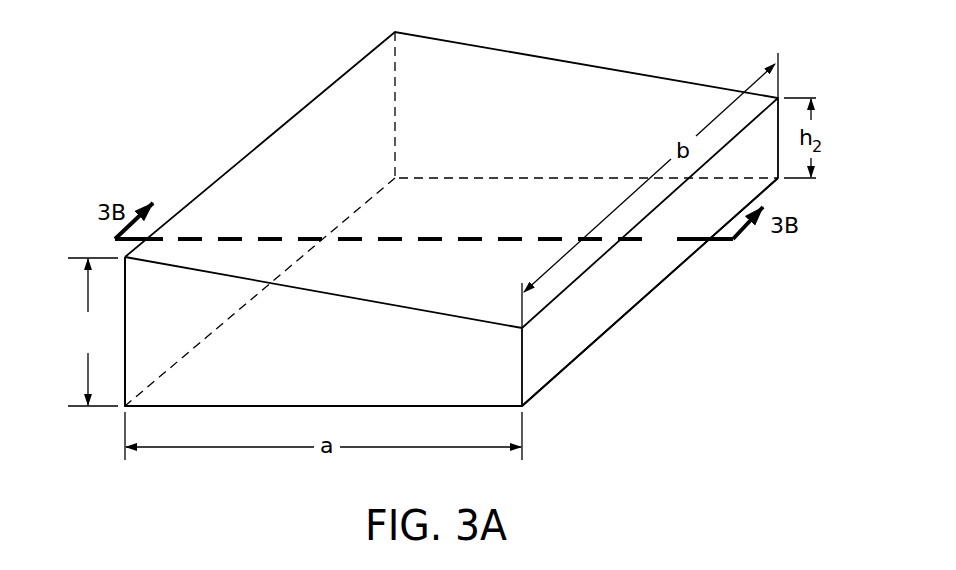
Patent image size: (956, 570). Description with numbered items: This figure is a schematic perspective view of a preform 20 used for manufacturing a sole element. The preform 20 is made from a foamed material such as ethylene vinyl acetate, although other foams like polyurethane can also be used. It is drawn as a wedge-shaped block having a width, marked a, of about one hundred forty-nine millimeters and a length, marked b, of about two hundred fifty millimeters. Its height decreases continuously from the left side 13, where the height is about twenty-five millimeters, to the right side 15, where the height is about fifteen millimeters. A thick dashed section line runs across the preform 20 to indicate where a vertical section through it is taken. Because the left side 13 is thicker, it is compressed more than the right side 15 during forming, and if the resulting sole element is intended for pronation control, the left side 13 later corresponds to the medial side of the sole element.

The preform 20 is at (568, 62).
The right side 15 is at (636, 345).
The left side 13 is at (87, 372).